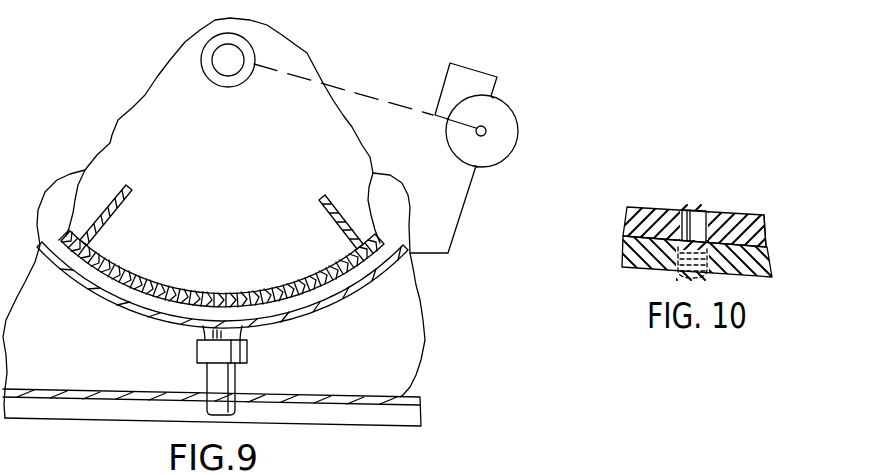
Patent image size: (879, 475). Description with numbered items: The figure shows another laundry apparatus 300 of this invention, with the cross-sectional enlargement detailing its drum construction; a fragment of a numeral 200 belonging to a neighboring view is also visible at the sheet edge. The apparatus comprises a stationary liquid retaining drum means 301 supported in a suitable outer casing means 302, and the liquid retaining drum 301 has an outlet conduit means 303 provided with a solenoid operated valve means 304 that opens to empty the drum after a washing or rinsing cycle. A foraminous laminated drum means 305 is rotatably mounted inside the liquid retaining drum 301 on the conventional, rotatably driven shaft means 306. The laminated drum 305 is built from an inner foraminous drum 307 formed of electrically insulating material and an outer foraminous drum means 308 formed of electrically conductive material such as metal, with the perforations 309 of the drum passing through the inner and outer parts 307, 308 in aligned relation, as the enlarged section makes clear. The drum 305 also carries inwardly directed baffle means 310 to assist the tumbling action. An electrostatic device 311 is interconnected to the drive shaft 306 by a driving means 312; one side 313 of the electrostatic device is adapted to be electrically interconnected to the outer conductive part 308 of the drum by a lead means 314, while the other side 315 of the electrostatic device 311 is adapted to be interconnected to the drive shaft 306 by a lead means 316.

In FIG. 9, the laundry apparatus 300 is at (517, 82).
In FIG. 9, the liquid retaining drum means 301 is at (340, 311).
In FIG. 9, the outer casing means 302 is at (415, 378).
In FIG. 9, the outlet conduit means 303 is at (247, 338).
In FIG. 9, the solenoid operated valve means 304 is at (247, 353).
In FIG. 9, the foraminous laminated drum means 305 is at (225, 291).
In FIG. 10, the foraminous laminated drum means 305 is at (743, 212).
In FIG. 9, the rotatably driven shaft means 306 is at (218, 52).
In FIG. 9, the inner foraminous drum 307 is at (150, 295).
In FIG. 10, the inner foraminous drum 307 is at (657, 212).
In FIG. 9, the outer foraminous drum means 308 is at (142, 308).
In FIG. 10, the outer foraminous drum means 308 is at (660, 268).
In FIG. 9, the perforations 309 is at (257, 290).
In FIG. 10, the perforations 309 is at (702, 213).
In FIG. 9, the baffle means 310 is at (119, 211).
In FIG. 9, the electrostatic device 311 is at (506, 136).
In FIG. 9, the driving means 312 is at (363, 94).
In FIG. 9, the one side of the electrostatic device 313 is at (477, 168).
In FIG. 9, the lead means 314 is at (460, 221).
In FIG. 9, the other side of the electrostatic device 315 is at (496, 96).
In FIG. 9, the lead means 316 is at (474, 67).
In FIG. 10, the apparatus 200 is at (675, 474).